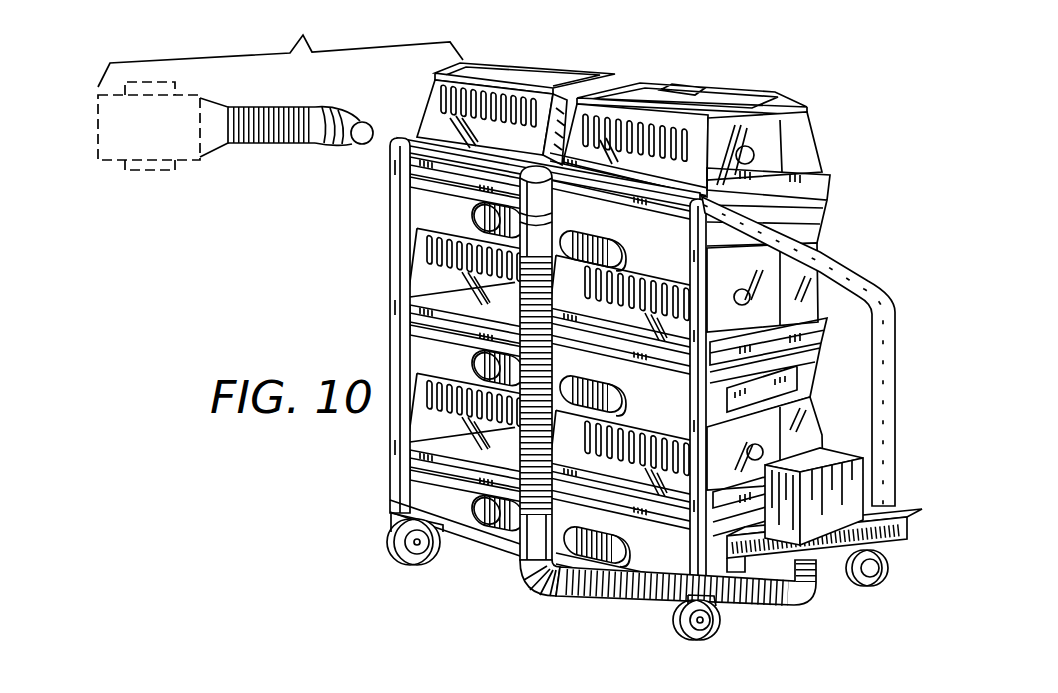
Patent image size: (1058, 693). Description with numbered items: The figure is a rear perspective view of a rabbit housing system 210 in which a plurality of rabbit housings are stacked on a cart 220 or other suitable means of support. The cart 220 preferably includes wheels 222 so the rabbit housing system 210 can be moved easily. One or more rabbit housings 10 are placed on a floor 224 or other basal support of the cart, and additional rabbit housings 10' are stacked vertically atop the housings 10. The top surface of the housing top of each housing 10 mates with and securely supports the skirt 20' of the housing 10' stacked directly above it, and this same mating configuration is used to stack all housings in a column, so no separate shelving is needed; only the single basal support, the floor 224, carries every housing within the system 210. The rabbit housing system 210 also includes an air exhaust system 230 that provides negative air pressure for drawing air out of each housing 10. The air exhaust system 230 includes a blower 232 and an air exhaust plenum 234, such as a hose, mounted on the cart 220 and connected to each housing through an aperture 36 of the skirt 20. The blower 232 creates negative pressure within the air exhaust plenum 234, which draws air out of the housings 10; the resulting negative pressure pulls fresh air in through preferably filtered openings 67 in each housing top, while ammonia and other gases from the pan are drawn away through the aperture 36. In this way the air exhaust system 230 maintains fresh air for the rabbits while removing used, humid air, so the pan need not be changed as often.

The rabbit housing 10 is at (824, 431).
The rabbit housing 10' is at (615, 289).
The skirt 20 is at (657, 562).
The skirt 20' is at (597, 370).
The aperture 36 is at (635, 536).
The openings 67 is at (594, 585).
The rabbit housing system 210 is at (836, 121).
The cart 220 is at (895, 360).
The wheels 222 is at (721, 631).
The floor 224 is at (390, 514).
The air exhaust system 230 is at (526, 597).
The blower 232 is at (848, 490).
The air exhaust plenum 234 is at (515, 510).